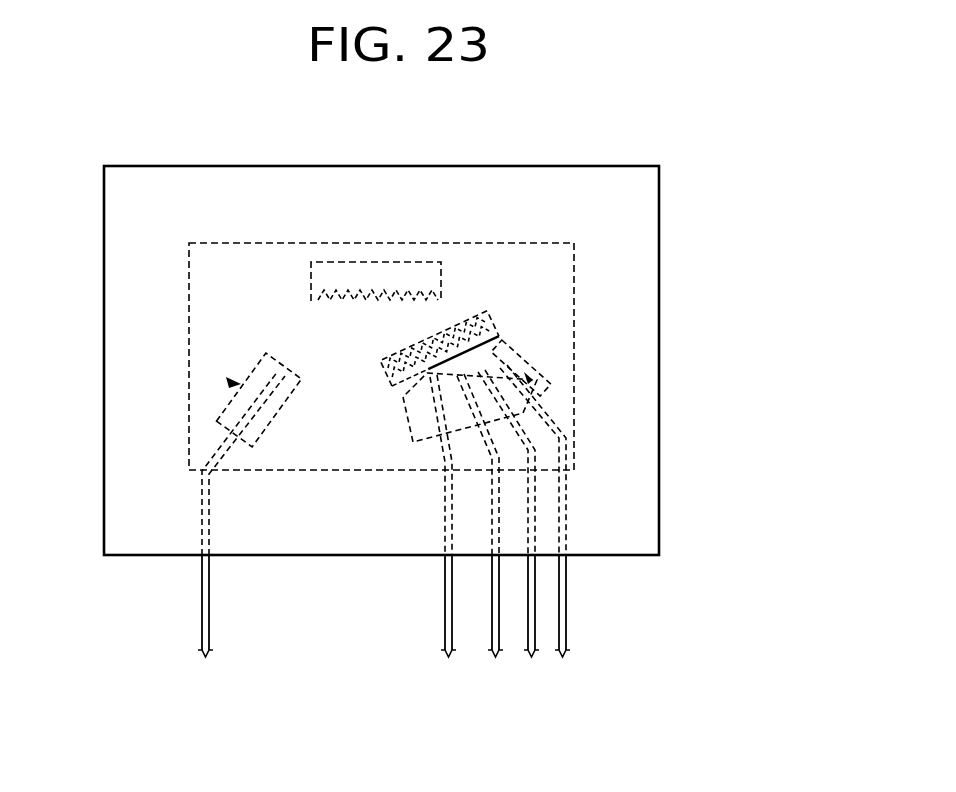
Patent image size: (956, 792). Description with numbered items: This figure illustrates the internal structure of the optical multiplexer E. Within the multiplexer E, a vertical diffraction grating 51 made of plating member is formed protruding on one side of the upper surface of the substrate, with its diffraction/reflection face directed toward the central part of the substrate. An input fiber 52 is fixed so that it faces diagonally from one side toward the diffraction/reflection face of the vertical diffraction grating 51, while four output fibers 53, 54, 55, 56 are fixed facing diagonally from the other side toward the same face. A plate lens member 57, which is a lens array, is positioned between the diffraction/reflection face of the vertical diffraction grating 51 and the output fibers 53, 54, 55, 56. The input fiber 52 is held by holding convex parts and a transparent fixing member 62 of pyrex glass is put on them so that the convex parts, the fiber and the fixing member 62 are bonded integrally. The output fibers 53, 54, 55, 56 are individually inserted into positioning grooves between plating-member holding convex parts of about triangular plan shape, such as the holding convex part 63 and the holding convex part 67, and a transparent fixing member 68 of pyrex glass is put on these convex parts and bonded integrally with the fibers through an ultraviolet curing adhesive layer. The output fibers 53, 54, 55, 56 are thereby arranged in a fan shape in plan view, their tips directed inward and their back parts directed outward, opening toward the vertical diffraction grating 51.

The vertical diffraction grating 51 is at (372, 262).
The plate lens member 57 is at (446, 334).
The input fiber 52 is at (232, 383).
The output fiber 53 is at (445, 594).
The output fiber 54 is at (492, 633).
The output fiber 55 is at (538, 591).
The output fiber 56 is at (566, 633).
The transparent fixing member 62 is at (272, 428).
The holding convex part 63 is at (437, 464).
The holding convex part 67 is at (540, 398).
The transparent fixing member 68 is at (522, 346).
The multiplexer E is at (586, 273).